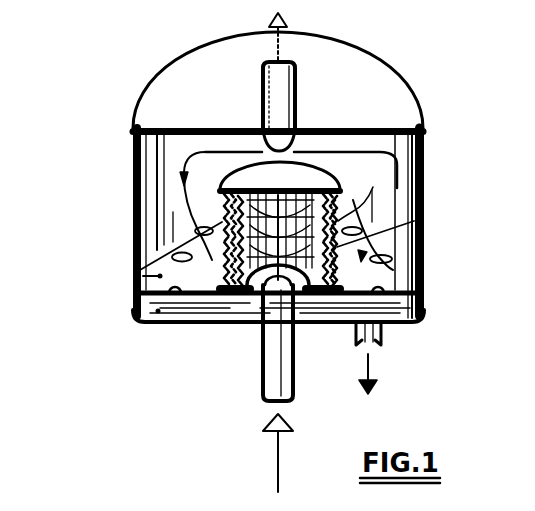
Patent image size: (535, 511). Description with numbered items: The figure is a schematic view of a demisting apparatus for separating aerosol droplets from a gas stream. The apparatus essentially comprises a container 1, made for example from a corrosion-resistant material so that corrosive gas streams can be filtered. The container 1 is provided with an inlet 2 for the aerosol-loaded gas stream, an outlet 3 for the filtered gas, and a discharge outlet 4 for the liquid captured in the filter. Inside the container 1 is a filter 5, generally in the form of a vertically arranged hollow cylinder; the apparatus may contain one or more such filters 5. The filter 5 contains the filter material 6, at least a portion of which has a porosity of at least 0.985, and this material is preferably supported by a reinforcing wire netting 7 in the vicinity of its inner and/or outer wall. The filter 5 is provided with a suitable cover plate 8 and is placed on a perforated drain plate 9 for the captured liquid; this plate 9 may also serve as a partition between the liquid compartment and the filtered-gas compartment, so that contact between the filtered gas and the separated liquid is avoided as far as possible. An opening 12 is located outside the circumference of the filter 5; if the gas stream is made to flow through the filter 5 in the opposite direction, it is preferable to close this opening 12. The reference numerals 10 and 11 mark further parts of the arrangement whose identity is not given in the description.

The container 1 is at (424, 105).
The inlet 2 is at (268, 377).
The outlet 3 is at (293, 95).
The discharge outlet 4 is at (380, 352).
The filter 5 is at (398, 239).
The filter material 6 is at (338, 215).
The reinforcing wire netting 7 is at (220, 205).
The cover plate 8 is at (293, 177).
The perforated drain plate 9 is at (134, 281).
The bottom flange 10 is at (158, 311).
The upper chamber 11 is at (157, 153).
The opening 12 is at (393, 270).